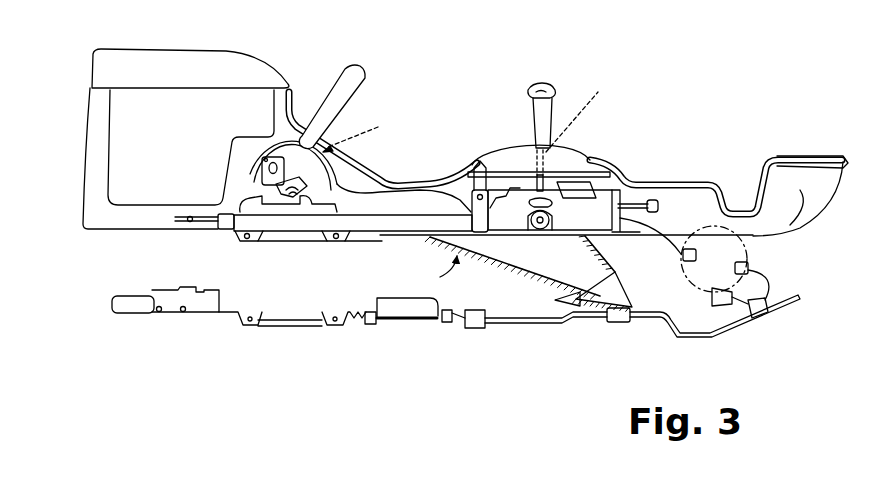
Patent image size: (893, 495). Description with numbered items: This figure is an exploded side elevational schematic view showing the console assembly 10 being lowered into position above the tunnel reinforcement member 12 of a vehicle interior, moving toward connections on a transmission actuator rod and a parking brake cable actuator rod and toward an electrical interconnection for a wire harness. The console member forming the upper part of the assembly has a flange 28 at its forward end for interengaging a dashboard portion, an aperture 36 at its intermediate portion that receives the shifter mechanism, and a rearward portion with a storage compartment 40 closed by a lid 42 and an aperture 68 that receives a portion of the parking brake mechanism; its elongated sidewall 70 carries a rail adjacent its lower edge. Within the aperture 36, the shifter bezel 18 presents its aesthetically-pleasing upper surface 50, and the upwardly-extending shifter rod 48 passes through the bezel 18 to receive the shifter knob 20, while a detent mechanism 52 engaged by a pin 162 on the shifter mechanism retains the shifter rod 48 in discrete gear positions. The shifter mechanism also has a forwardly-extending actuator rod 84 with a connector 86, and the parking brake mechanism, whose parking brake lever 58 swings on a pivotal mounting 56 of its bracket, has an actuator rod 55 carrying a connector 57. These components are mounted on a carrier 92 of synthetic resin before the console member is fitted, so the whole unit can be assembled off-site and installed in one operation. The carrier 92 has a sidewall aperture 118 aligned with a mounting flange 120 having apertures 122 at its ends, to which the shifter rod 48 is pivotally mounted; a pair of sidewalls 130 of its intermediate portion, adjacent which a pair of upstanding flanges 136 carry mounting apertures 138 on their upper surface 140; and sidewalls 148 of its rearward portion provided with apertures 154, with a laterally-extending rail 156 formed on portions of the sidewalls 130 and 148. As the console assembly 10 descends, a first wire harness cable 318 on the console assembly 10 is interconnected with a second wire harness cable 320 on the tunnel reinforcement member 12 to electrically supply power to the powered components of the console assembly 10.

The console assembly 10 is at (399, 187).
The tunnel reinforcement member 12 is at (482, 328).
The shifter bezel 18 is at (489, 148).
The shifter knob 20 is at (553, 83).
The flange 28 is at (800, 158).
The aperture 36 is at (590, 156).
The storage compartment 40 is at (130, 123).
The lid 42 is at (189, 68).
The shifter rod 48 is at (585, 112).
The upper surface 50 is at (521, 192).
The detent mechanism 52 is at (564, 207).
The actuator rod 55 is at (207, 224).
The pivotal mounting 56 is at (286, 187).
The connector 57 is at (181, 215).
The parking brake lever 58 is at (337, 95).
The aperture 68 is at (364, 132).
The sidewall 70 is at (785, 200).
The actuator rod 84 is at (640, 204).
The connector 86 is at (655, 201).
The carrier 92 is at (436, 273).
The aperture 118 is at (530, 228).
The mounting flange 120 is at (548, 228).
The apertures 122 is at (540, 224).
The sidewalls 130 is at (405, 233).
The upstanding flanges 136 is at (500, 236).
The mounting apertures 138 is at (471, 187).
The upper surface 140 is at (477, 165).
The sidewalls 148 is at (278, 241).
The apertures 154 is at (247, 239).
The rail 156 is at (292, 241).
The pin 162 is at (516, 190).
The first wire harness cable 318 is at (664, 240).
The second wire harness cable 320 is at (749, 270).